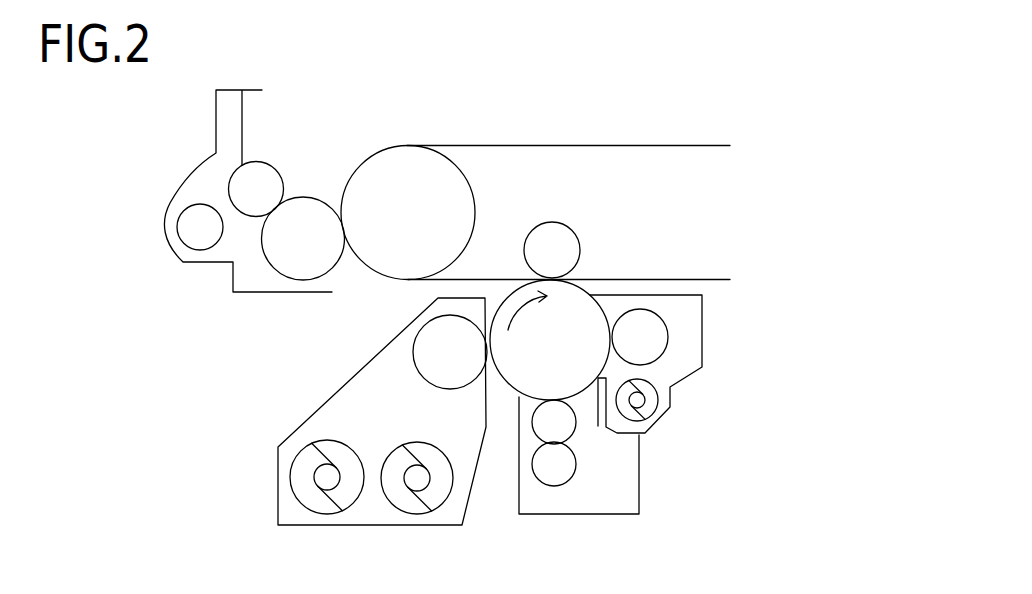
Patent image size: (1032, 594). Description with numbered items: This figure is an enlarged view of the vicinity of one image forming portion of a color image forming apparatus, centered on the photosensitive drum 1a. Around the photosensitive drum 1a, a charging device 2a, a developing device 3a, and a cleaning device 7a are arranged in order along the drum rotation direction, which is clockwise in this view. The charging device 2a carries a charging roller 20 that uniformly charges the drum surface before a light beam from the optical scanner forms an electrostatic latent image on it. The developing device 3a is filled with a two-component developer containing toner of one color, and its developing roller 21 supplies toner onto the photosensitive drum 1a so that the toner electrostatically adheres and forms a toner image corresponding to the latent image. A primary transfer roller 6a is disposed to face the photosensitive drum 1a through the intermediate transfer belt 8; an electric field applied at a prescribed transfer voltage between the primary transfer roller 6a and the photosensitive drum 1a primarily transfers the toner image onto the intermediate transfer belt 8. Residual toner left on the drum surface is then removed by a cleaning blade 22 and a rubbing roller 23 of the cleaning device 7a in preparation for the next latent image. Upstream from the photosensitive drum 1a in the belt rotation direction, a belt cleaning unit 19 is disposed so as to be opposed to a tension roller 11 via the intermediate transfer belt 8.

The belt cleaning unit 19 is at (190, 167).
The intermediate transfer belt 8 is at (592, 146).
The tension roller 11 is at (474, 197).
The primary transfer roller 6a is at (572, 230).
The photosensitive drum 1a is at (588, 295).
The rubbing roller 23 is at (658, 337).
The cleaning device 7a is at (695, 373).
The developing roller 21 is at (442, 342).
The developing device 3a is at (302, 412).
The charging roller 20 is at (532, 432).
The charging device 2a is at (538, 515).
The cleaning blade 22 is at (589, 428).